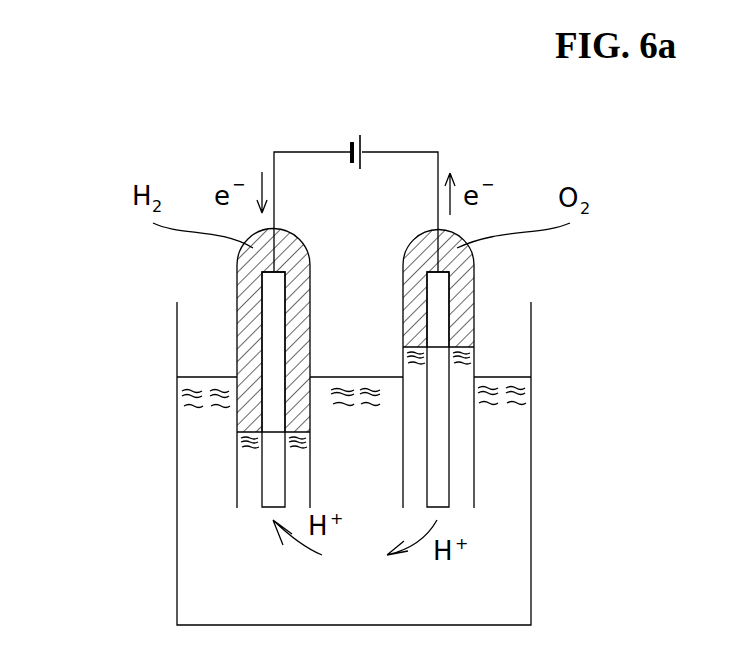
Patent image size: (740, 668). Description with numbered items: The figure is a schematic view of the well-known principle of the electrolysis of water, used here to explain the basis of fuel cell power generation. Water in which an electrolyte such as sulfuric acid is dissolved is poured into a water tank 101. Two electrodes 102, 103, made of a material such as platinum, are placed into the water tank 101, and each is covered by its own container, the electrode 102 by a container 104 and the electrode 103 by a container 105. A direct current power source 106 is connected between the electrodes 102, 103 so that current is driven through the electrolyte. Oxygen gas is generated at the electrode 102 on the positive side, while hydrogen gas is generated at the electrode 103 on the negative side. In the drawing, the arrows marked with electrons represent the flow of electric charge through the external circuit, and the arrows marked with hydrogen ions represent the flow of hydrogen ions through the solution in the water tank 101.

The water tank 101 is at (531, 333).
The electrode 102 is at (448, 293).
The electrode 103 is at (260, 290).
The container 104 is at (472, 456).
The container 105 is at (237, 481).
The direct current power source 106 is at (389, 121).